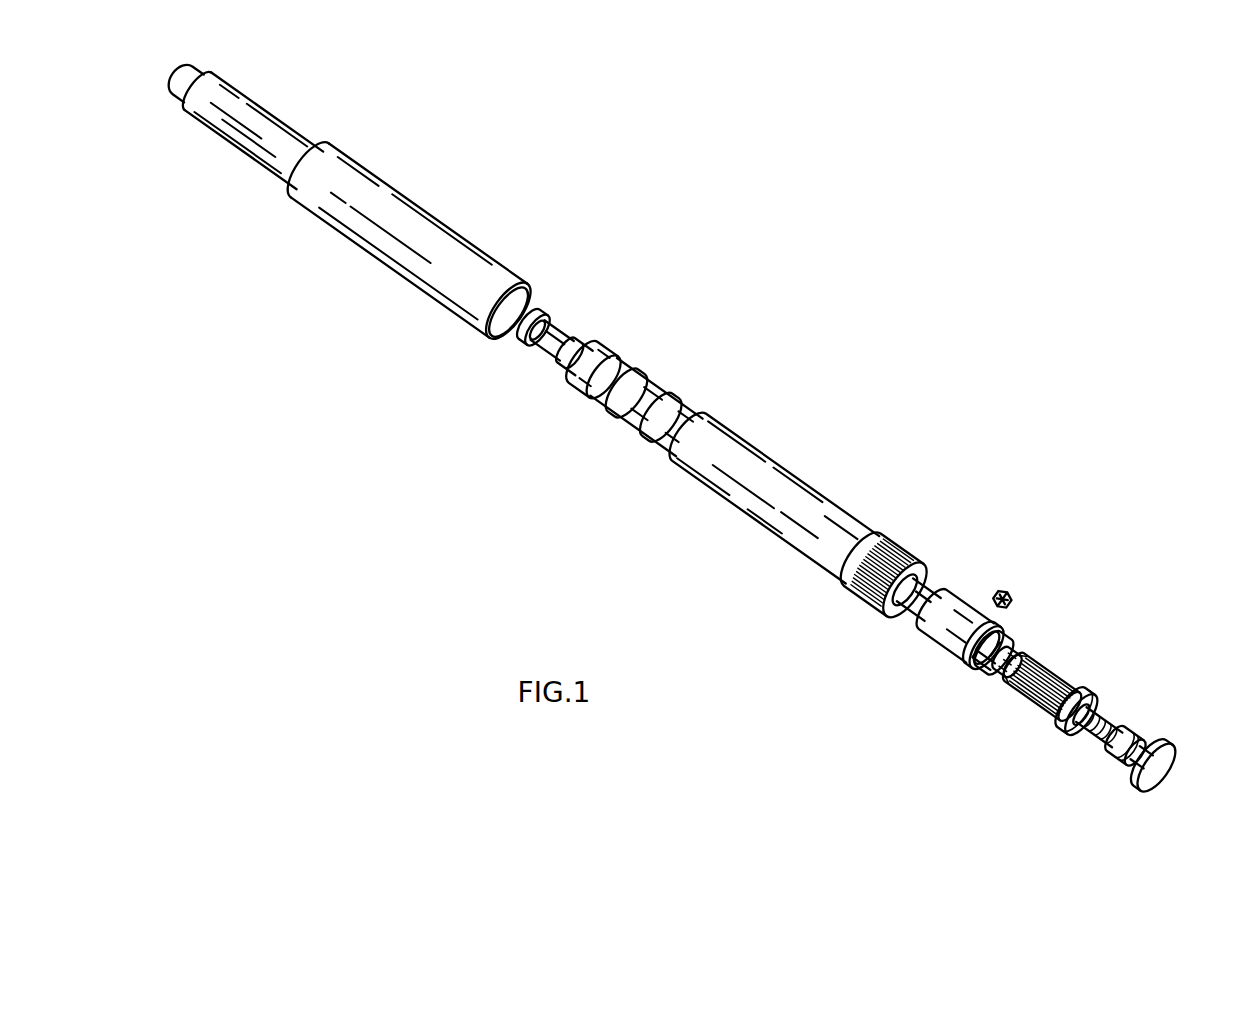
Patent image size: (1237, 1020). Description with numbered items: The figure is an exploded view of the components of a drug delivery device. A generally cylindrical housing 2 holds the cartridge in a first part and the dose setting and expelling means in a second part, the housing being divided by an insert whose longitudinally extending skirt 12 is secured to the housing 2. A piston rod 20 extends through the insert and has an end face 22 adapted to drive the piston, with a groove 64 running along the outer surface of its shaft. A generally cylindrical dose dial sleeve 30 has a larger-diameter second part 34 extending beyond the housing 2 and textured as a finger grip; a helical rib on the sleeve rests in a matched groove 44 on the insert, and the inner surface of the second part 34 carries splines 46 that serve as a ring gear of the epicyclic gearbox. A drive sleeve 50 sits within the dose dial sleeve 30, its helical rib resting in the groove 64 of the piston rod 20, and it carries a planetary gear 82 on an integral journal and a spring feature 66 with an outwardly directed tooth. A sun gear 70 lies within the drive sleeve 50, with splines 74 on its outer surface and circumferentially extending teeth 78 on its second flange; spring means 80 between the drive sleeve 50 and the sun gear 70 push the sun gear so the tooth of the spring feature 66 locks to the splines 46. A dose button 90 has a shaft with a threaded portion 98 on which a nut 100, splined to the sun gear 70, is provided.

The housing 2 is at (370, 193).
The end face 22 is at (537, 317).
The piston rod 20 is at (545, 352).
The groove 64 is at (564, 343).
The skirt 12 is at (575, 378).
The groove 44 is at (630, 419).
The dose dial sleeve 30 is at (732, 482).
The second part of dose dial sleeve 34 is at (862, 598).
The splines 46 is at (926, 566).
The drive sleeve 50 is at (935, 641).
The spring feature 66 is at (996, 688).
The planetary gear 82 is at (999, 592).
The spring means 80 is at (1014, 658).
The sun gear 70 is at (1030, 690).
The splines 74 is at (1058, 682).
The teeth 78 is at (1080, 748).
The threaded portion 98 is at (1111, 735).
The nut 100 is at (1126, 732).
The dose button 90 is at (1160, 777).